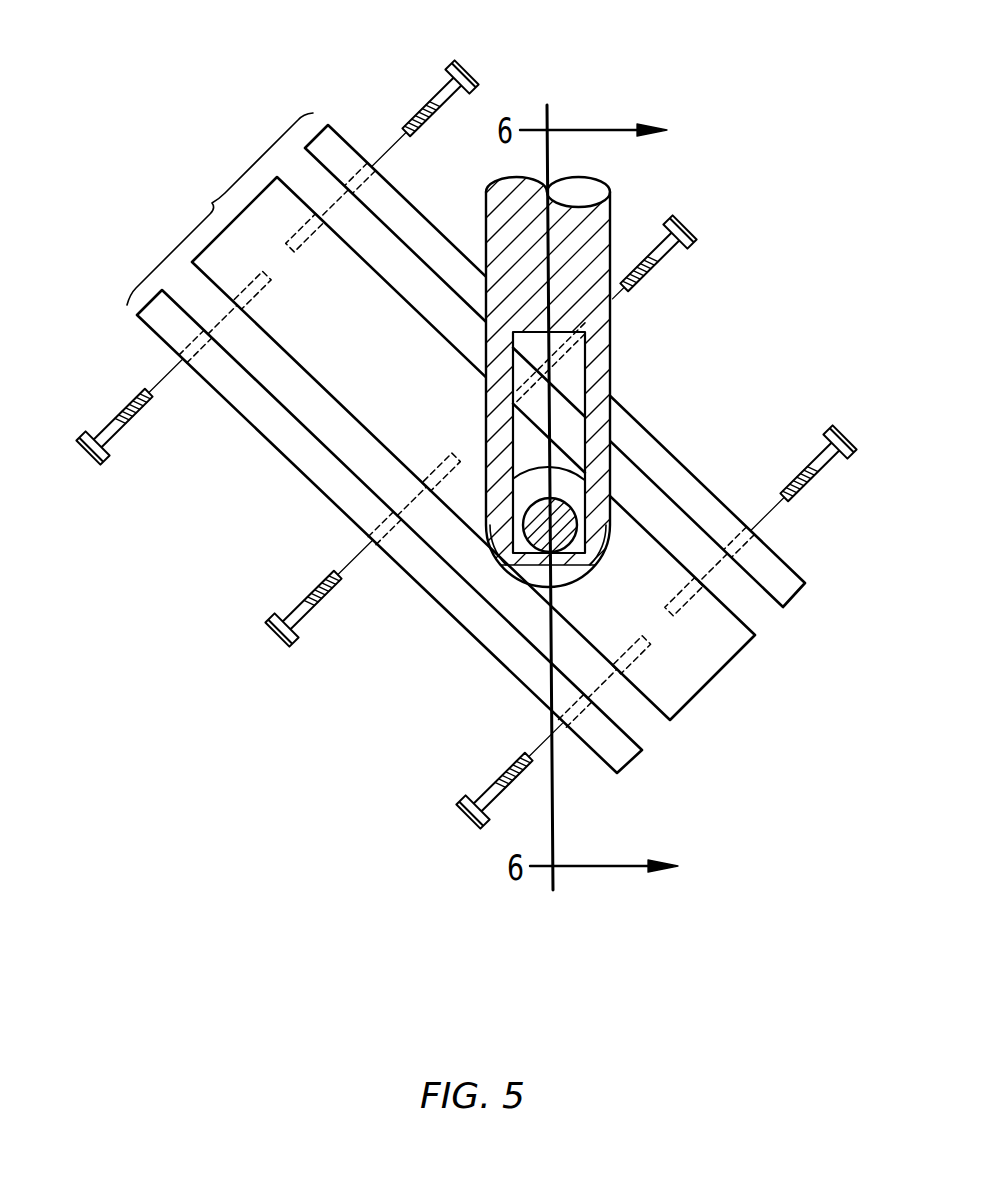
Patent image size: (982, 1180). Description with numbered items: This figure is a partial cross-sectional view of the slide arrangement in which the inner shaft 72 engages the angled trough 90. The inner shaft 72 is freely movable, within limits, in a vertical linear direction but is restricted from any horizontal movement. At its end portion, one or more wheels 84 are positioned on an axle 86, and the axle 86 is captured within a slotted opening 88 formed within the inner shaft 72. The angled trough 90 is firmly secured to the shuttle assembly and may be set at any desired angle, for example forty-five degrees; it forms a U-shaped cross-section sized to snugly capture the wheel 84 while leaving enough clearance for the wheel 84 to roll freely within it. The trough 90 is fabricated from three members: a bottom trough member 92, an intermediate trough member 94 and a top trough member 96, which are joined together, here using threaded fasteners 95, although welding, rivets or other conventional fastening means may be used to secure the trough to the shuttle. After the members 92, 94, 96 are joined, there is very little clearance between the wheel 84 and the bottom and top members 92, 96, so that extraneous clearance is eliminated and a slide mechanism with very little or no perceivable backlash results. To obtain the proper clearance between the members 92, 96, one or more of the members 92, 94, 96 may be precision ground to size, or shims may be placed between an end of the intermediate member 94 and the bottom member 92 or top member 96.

The inner shaft 72 is at (598, 223).
The wheel 84 is at (537, 487).
The axle 86 is at (563, 528).
The slotted opening 88 is at (535, 445).
The angled trough member 90 is at (495, 465).
The bottom trough member 92 is at (626, 761).
The intermediate trough member 94 is at (712, 673).
The top trough member 96 is at (792, 593).
The threaded fasteners 95 is at (471, 66).